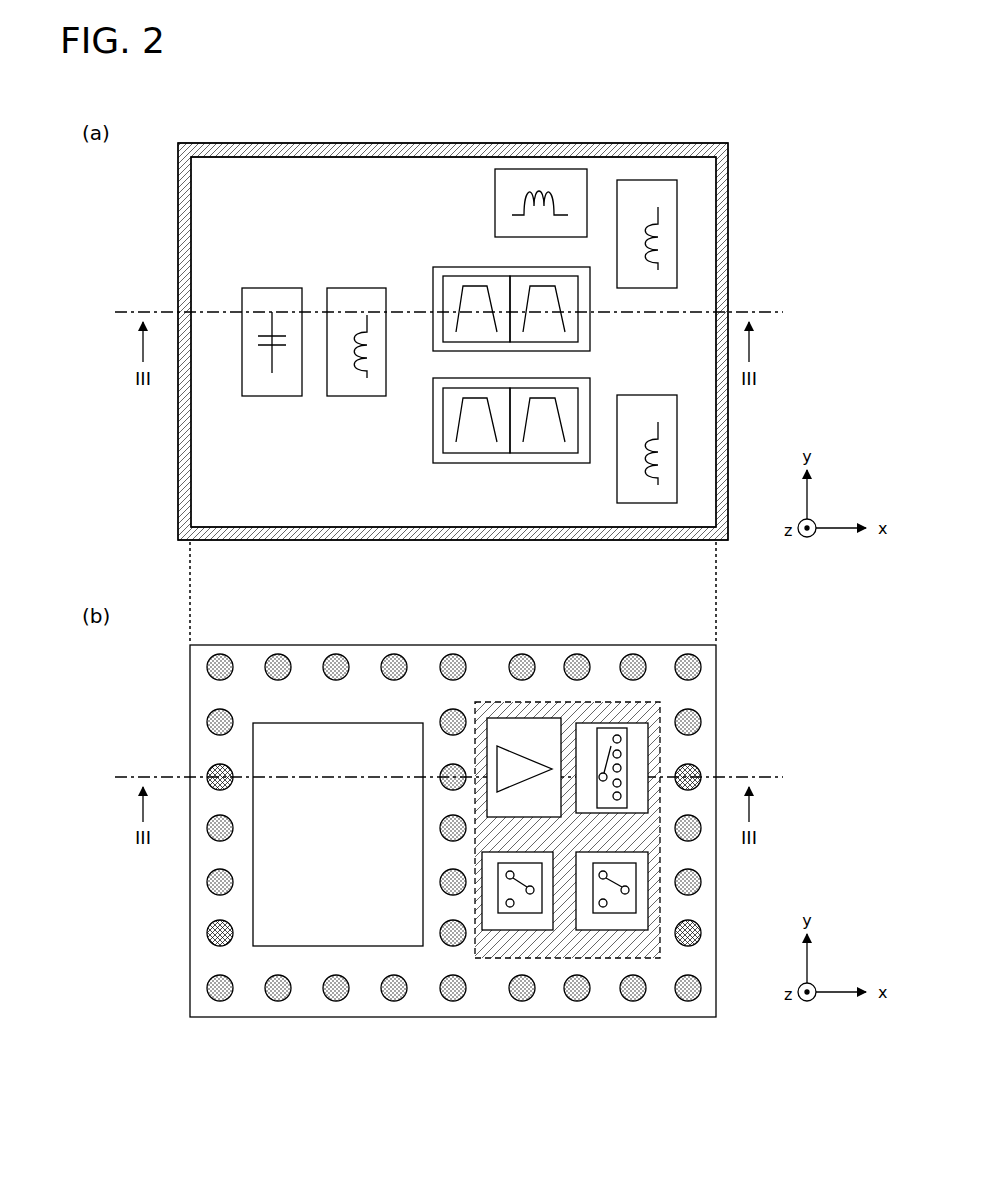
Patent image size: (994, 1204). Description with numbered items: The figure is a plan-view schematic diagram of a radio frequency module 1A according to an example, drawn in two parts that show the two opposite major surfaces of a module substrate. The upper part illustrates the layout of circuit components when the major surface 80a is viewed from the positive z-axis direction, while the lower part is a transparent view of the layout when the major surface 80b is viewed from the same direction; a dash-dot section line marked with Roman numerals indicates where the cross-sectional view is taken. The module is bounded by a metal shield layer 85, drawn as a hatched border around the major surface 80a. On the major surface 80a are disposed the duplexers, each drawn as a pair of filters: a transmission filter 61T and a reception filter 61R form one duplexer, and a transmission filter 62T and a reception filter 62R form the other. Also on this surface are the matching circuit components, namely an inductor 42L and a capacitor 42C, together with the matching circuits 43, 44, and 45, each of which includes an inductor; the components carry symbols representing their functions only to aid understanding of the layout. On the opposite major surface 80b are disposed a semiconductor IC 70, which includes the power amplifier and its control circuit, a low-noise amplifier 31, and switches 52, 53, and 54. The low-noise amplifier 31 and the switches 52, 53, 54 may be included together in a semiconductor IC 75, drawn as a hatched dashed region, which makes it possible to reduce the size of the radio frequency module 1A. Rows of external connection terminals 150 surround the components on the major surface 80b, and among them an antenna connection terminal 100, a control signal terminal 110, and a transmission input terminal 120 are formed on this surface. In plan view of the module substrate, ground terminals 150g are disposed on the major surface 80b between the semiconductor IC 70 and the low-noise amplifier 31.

The radio frequency module 1A is at (800, 138).
The major surface 80a is at (698, 230).
The metal shield layer 85 is at (722, 280).
The capacitor 42C is at (262, 298).
The inductor 42L is at (346, 298).
The matching circuit 43 is at (505, 196).
The matching circuit 44 is at (670, 218).
The matching circuit 45 is at (670, 416).
The transmission filter 61T is at (472, 282).
The reception filter 61R is at (563, 282).
The transmission filter 62T is at (470, 448).
The reception filter 62R is at (560, 448).
The major surface 80b is at (700, 700).
The semiconductor IC 70 is at (292, 732).
The ground terminals 150g is at (446, 822).
The low-noise amplifier 31 is at (508, 725).
The switch 54 is at (638, 745).
The switch 52 is at (510, 933).
The switch 53 is at (625, 933).
The semiconductor IC 75 is at (568, 955).
The transmission input terminal 120 is at (212, 768).
The external connection terminals 150 is at (214, 835).
The control signal terminal 110 is at (210, 930).
The antenna connection terminal 100 is at (698, 930).